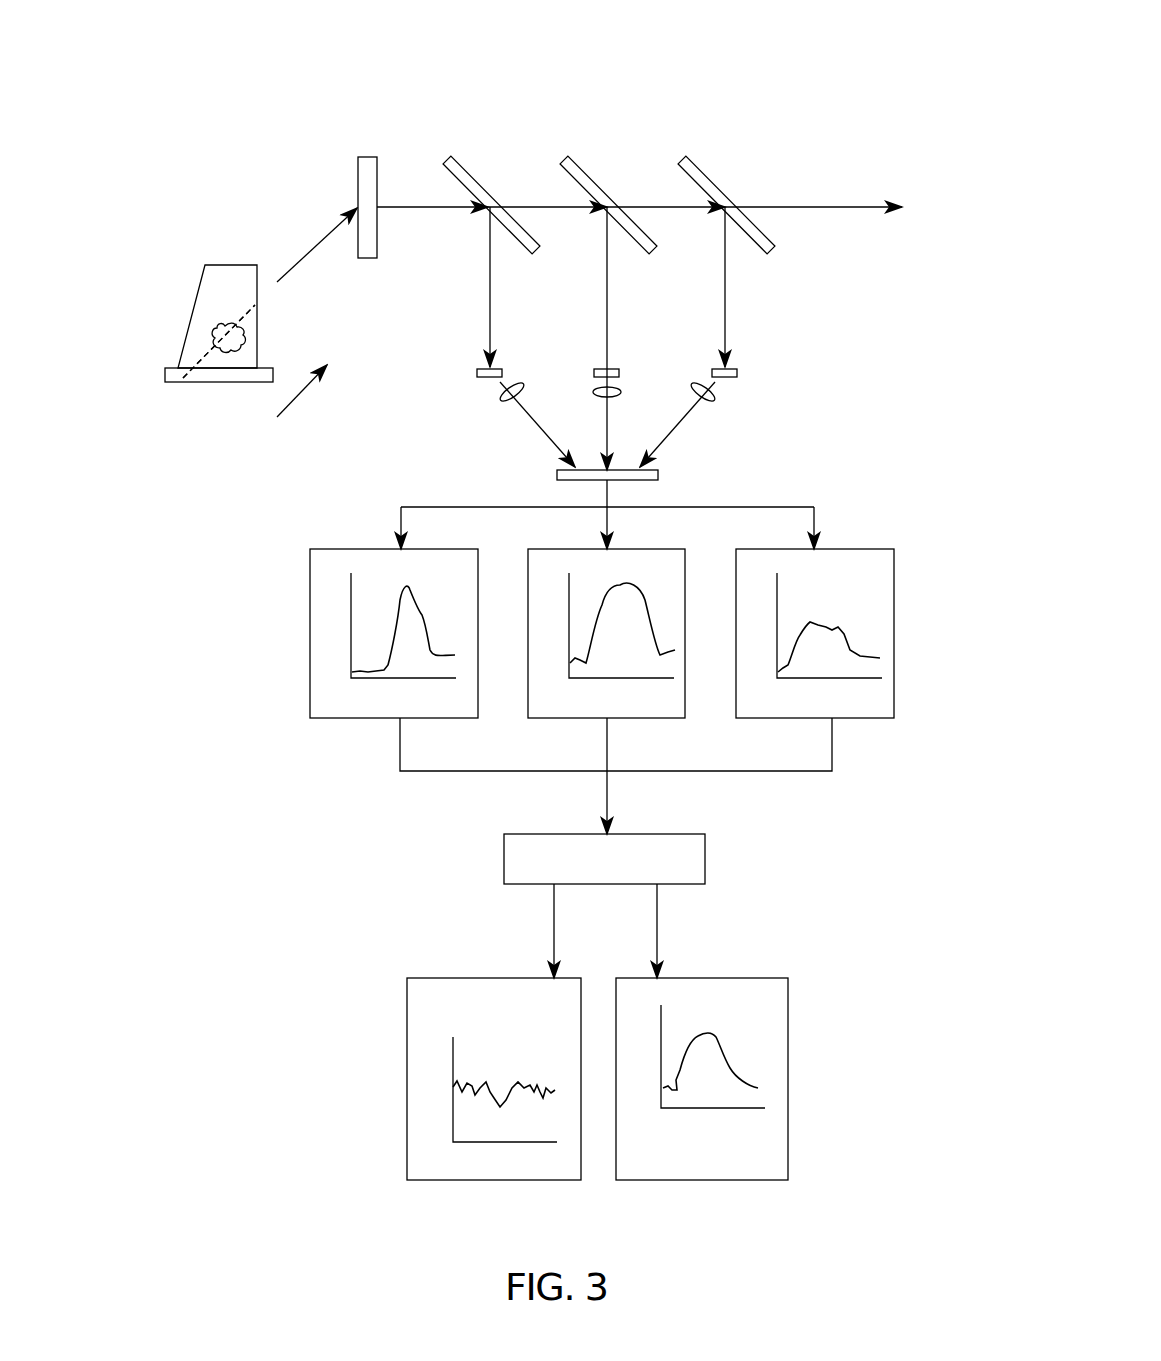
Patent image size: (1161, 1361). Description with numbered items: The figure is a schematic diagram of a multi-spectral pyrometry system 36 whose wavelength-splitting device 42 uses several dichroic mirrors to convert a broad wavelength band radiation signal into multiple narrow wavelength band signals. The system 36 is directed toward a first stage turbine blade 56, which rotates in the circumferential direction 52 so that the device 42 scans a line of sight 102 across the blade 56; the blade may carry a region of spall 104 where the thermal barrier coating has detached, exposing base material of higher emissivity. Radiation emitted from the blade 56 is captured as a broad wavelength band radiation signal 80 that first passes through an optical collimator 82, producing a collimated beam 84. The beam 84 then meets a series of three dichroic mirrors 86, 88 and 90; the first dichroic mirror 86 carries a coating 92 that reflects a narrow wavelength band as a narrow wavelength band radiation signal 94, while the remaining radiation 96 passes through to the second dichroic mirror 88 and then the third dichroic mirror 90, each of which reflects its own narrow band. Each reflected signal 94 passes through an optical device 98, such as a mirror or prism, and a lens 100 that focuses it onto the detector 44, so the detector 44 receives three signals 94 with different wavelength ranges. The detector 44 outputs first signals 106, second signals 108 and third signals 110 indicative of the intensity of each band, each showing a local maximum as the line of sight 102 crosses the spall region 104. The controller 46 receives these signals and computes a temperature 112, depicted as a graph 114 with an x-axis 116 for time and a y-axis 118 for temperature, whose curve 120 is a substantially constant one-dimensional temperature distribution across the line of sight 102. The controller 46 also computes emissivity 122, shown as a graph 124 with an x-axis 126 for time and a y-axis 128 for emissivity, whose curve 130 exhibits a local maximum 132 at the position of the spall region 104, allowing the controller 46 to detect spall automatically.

The multi-spectral pyrometry system 36 is at (780, 54).
The wavelength-splitting device 42 is at (786, 298).
The detector 44 is at (557, 476).
The controller 46 is at (504, 862).
The circumferential direction 52 is at (305, 388).
The first stage turbine blade 56 is at (230, 265).
The broad wavelength band radiation signal 80 is at (318, 243).
The optical collimator 82 is at (366, 157).
The collimated beam 84 is at (430, 210).
The first dichroic mirror 86 is at (462, 161).
The second dichroic mirror 88 is at (579, 161).
The third dichroic mirror 90 is at (698, 161).
The coating 92 is at (462, 170).
The narrow wavelength band radiation signal 94 is at (488, 318).
The radiation passing through dichroic mirror 96 is at (550, 209).
The optical device 98 is at (477, 374).
The lens 100 is at (502, 398).
The line of sight 102 is at (198, 362).
The region of spall 104 is at (210, 324).
The first signals 106 is at (343, 548).
The second signals 108 is at (528, 570).
The third signals 110 is at (848, 548).
The temperature 112 is at (435, 977).
The temperature graph 114 is at (512, 1003).
The x-axis of temperature graph 116 is at (500, 1142).
The y-axis of temperature graph 118 is at (454, 1052).
The temperature curve 120 is at (532, 1084).
The emissivity 122 is at (768, 977).
The emissivity graph 124 is at (762, 1030).
The x-axis of emissivity graph 126 is at (745, 1105).
The y-axis of emissivity graph 128 is at (662, 1020).
The emissivity curve 130 is at (728, 1062).
The local maximum 132 is at (708, 1033).